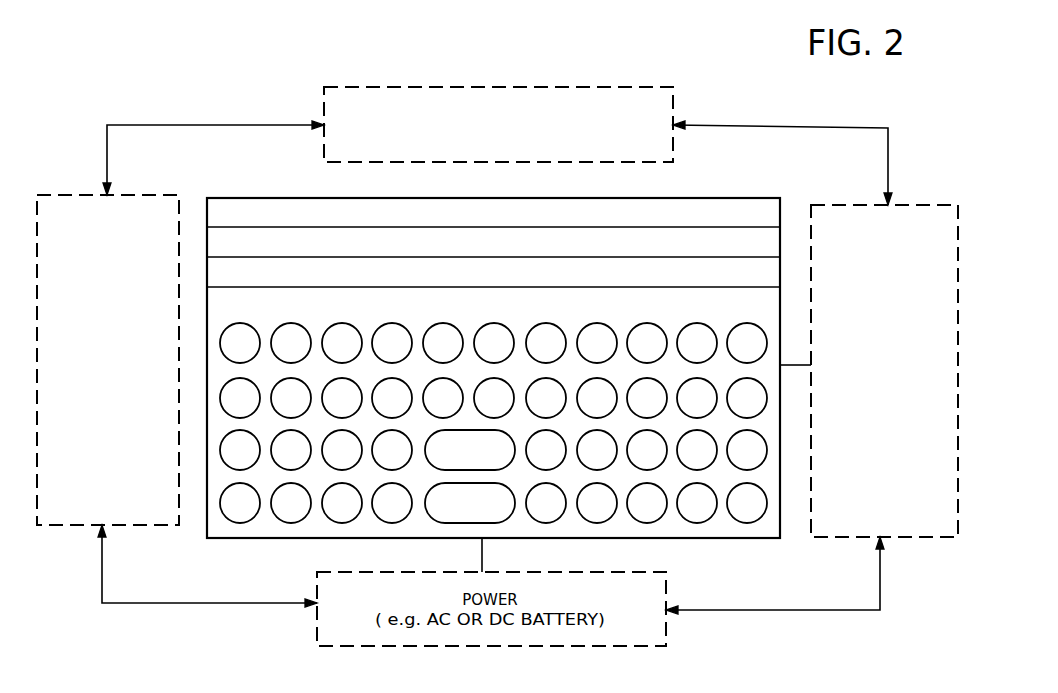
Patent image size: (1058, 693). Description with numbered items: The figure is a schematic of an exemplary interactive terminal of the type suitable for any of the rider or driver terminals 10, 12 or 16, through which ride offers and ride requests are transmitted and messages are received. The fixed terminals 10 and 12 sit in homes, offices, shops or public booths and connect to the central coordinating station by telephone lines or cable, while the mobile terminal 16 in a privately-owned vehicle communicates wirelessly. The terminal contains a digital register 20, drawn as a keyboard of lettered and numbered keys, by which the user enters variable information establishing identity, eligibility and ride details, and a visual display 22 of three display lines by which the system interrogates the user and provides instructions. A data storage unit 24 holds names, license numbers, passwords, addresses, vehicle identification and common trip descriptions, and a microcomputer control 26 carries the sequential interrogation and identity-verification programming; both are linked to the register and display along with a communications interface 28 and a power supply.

The electronic terminal 10 is at (182, 592).
The electronic terminal 12 is at (182, 592).
The mobile terminal 16 is at (121, 608).
The digital register 20 is at (496, 373).
The visual display 22 is at (725, 199).
The data storage unit 24 is at (75, 194).
The microcomputer control 26 is at (925, 204).
The communications interface 28 is at (612, 86).